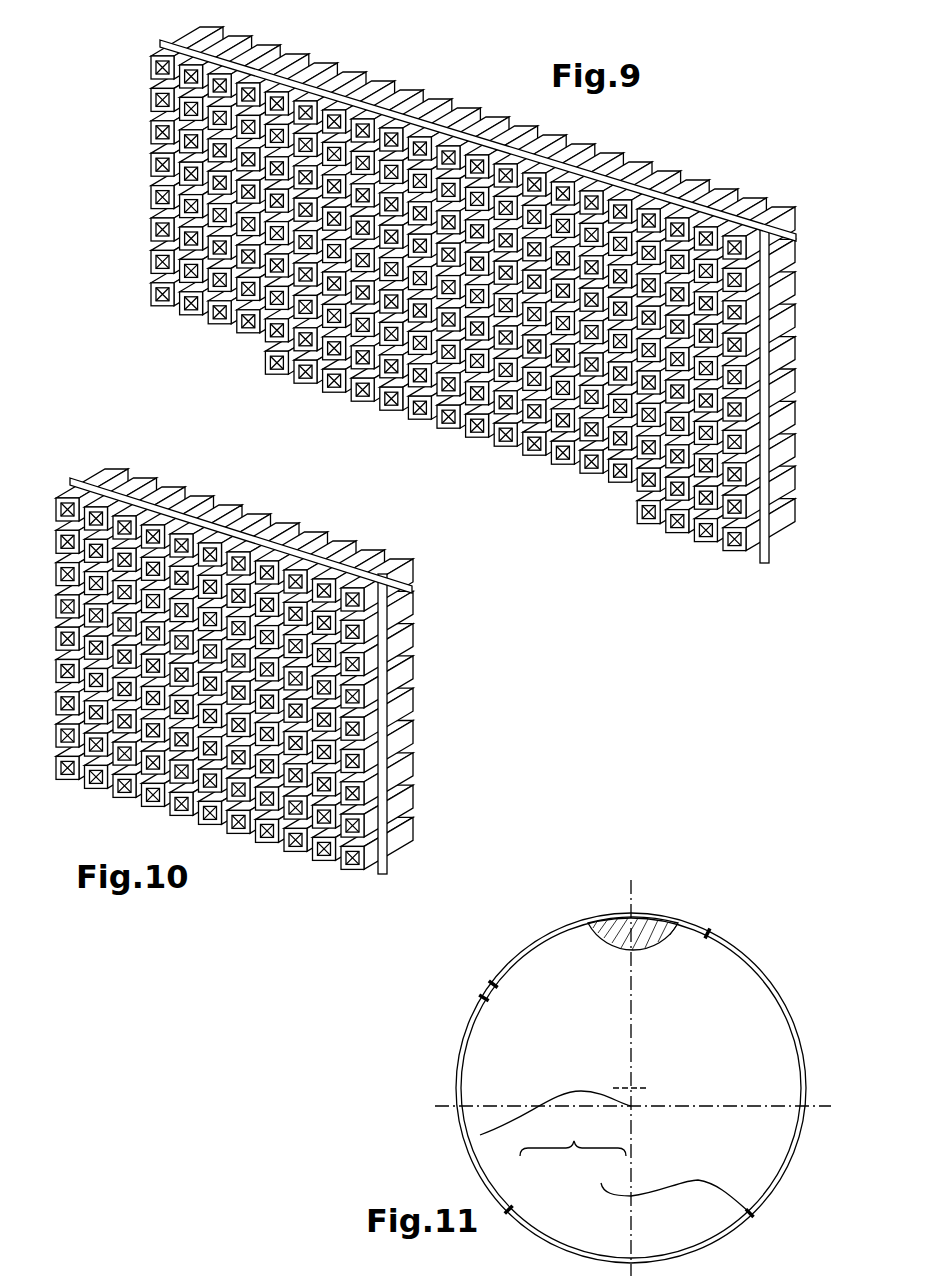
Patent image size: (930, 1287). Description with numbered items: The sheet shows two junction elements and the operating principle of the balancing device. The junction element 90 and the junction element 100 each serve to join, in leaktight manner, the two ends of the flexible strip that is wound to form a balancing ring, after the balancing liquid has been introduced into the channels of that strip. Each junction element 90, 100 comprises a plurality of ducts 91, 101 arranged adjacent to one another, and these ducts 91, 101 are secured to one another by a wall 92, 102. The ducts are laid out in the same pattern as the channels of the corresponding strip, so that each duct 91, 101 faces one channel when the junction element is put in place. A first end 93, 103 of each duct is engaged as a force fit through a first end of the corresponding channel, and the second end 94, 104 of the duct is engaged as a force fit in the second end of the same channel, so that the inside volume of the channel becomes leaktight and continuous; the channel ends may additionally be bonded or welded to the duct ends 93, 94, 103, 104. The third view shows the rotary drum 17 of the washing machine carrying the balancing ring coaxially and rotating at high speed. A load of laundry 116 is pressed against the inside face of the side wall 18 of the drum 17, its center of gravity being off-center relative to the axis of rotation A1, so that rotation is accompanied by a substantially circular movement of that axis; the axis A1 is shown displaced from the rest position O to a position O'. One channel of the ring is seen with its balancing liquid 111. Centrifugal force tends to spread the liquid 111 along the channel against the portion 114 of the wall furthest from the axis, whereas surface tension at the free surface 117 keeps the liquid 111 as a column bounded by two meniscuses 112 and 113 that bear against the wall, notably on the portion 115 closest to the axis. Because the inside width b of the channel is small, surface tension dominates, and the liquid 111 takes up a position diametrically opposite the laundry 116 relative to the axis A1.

In FIG. 9, the junction element 90 is at (459, 325).
In FIG. 9, the duct 91 is at (763, 550).
In FIG. 9, the wall 92 is at (152, 34).
In FIG. 9, the first end of duct 93 is at (780, 535).
In FIG. 9, the second end of duct 94 is at (697, 492).
In FIG. 10, the junction element 100 is at (251, 670).
In FIG. 10, the duct 101 is at (396, 840).
In FIG. 10, the wall 102 is at (66, 470).
In FIG. 10, the first end of duct 103 is at (405, 835).
In FIG. 10, the second end of duct 104 is at (287, 832).
In FIG. 11, the balancing liquid 111 is at (725, 1223).
In FIG. 11, the meniscus 112 is at (668, 1188).
In FIG. 11, the meniscus 113 is at (502, 1200).
In FIG. 11, the portion of the inside face of the channel wall furthest from the axis 114 is at (698, 930).
In FIG. 11, the portion of the inside face of the channel wall closest to the axis 115 is at (752, 952).
In FIG. 11, the load of laundry 116 is at (607, 942).
In FIG. 11, the free surface of the balancing liquid 117 is at (573, 1136).
In FIG. 11, the rotary drum 17 is at (476, 990).
In FIG. 11, the side wall 18 is at (516, 948).
In FIG. 11, the position of the drum axis at rest O is at (628, 1078).
In FIG. 11, the displaced position of the drum axis O' is at (652, 1122).
In FIG. 11, the axis of rotation of the drum A1 is at (623, 1098).
In FIG. 11, the inside width of the channel b is at (737, 972).